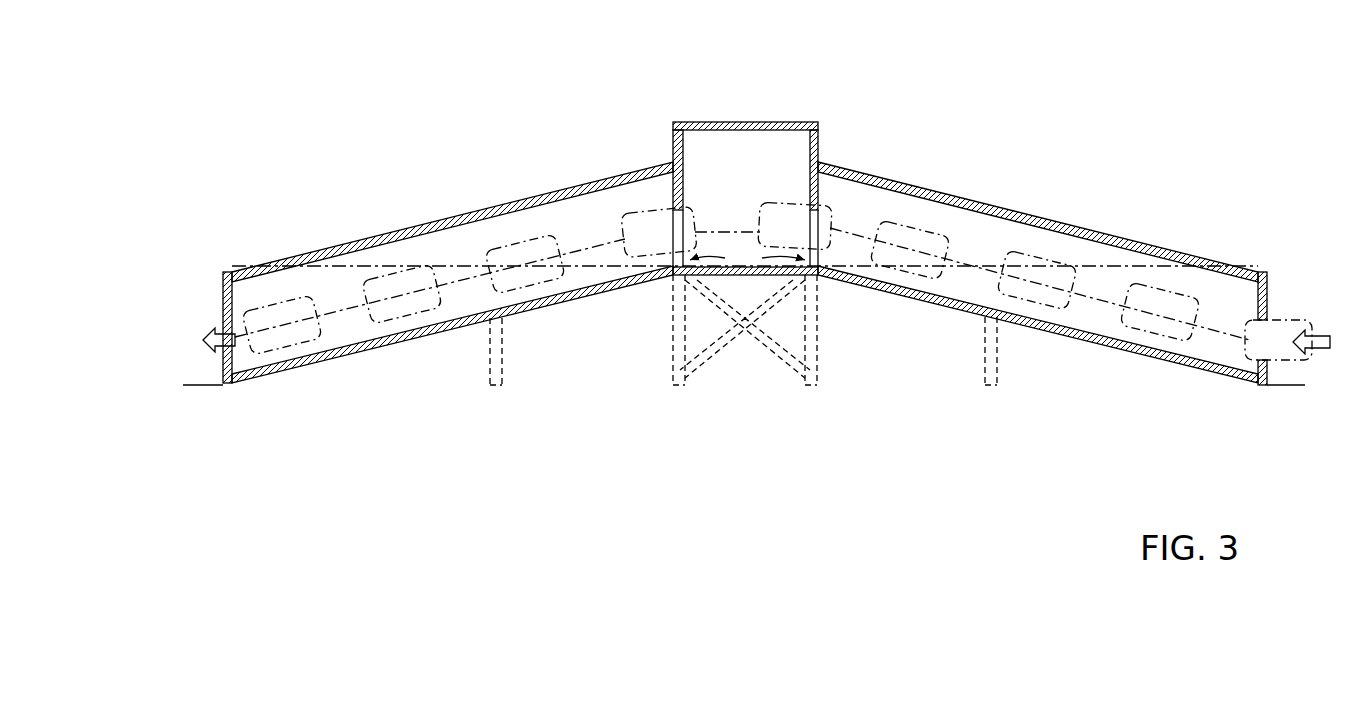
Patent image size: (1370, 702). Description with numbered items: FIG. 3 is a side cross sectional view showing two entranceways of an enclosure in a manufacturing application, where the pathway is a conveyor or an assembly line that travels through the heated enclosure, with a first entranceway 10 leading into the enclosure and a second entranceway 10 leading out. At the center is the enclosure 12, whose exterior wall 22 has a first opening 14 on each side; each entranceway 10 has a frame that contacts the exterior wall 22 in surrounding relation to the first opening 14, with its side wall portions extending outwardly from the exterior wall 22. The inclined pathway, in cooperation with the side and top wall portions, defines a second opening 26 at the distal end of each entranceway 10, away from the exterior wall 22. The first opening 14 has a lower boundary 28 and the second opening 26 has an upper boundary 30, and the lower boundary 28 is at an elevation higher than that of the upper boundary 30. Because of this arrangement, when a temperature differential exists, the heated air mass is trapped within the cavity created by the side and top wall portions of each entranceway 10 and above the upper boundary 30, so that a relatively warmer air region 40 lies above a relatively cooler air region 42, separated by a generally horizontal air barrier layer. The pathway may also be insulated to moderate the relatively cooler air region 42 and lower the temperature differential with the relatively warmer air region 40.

The entranceway 10 is at (438, 181).
The enclosure 12 is at (758, 160).
The first opening 14 is at (665, 195).
The exterior wall 22 is at (673, 150).
The second opening 26 is at (218, 305).
The lower boundary 28 is at (747, 256).
The upper boundary 30 is at (217, 276).
The relatively warmer air region 40 is at (721, 275).
The relatively cooler air region 42 is at (742, 284).